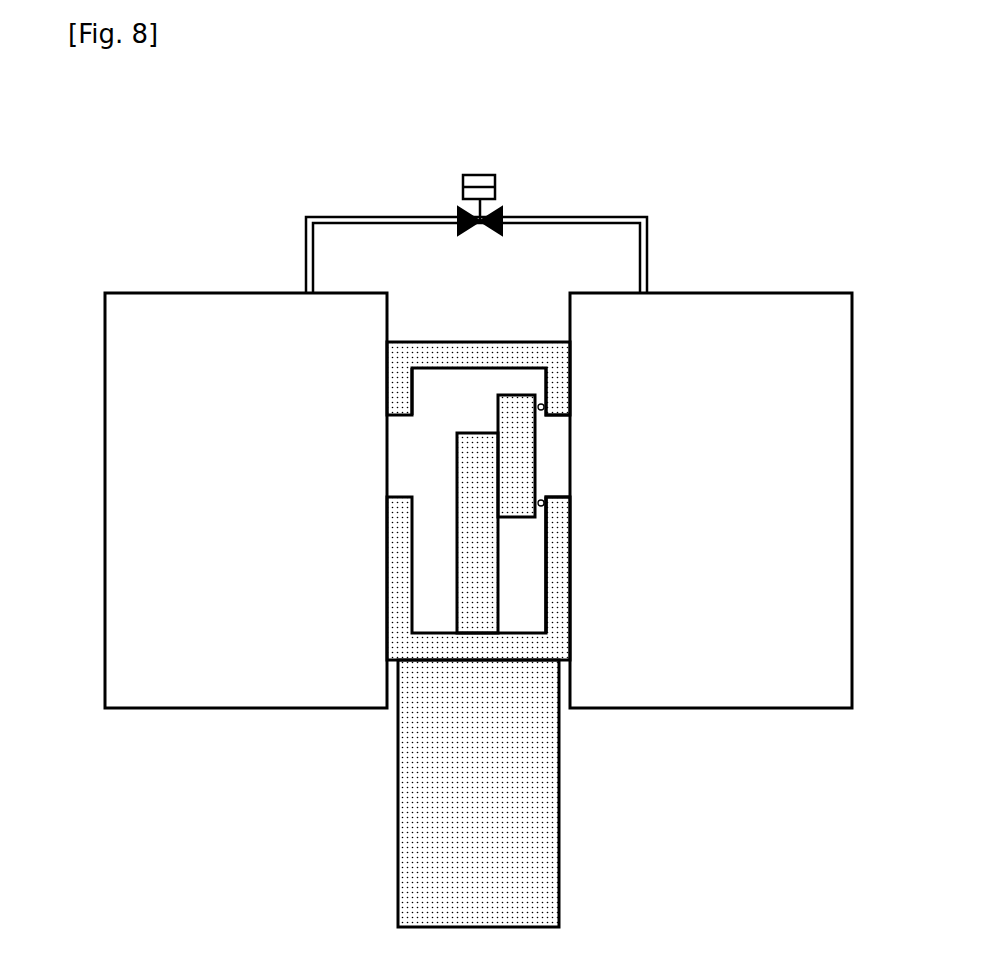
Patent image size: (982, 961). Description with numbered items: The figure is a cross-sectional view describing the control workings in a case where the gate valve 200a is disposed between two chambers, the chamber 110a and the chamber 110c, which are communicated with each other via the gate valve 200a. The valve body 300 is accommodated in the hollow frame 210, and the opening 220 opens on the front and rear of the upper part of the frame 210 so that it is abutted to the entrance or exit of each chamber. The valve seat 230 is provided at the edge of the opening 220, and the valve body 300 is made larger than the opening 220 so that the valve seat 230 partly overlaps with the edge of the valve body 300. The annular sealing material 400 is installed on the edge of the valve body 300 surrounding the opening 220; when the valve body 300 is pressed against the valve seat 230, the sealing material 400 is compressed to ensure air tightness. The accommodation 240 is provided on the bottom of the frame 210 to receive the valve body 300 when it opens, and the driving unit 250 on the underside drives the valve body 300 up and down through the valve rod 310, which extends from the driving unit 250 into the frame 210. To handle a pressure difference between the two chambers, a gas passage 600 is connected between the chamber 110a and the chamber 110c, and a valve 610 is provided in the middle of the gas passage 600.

The gate valve 200a is at (752, 157).
The chamber 110a is at (148, 697).
The chamber 110c is at (792, 697).
The gas passage 600 is at (347, 222).
The valve 610 is at (490, 226).
The frame 210 is at (450, 342).
The opening 220 is at (557, 453).
The valve seat 230 is at (552, 410).
The accommodation 240 is at (428, 598).
The driving unit 250 is at (545, 832).
The valve body 300 is at (518, 405).
The valve rod 310 is at (478, 465).
The sealing material 400 is at (548, 406).